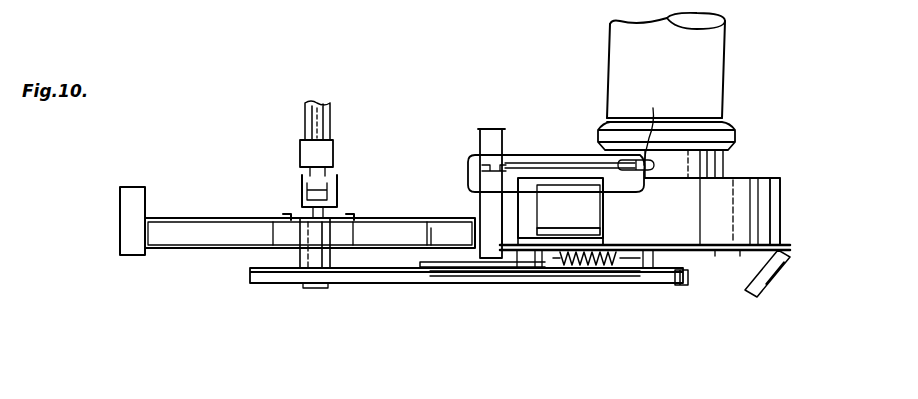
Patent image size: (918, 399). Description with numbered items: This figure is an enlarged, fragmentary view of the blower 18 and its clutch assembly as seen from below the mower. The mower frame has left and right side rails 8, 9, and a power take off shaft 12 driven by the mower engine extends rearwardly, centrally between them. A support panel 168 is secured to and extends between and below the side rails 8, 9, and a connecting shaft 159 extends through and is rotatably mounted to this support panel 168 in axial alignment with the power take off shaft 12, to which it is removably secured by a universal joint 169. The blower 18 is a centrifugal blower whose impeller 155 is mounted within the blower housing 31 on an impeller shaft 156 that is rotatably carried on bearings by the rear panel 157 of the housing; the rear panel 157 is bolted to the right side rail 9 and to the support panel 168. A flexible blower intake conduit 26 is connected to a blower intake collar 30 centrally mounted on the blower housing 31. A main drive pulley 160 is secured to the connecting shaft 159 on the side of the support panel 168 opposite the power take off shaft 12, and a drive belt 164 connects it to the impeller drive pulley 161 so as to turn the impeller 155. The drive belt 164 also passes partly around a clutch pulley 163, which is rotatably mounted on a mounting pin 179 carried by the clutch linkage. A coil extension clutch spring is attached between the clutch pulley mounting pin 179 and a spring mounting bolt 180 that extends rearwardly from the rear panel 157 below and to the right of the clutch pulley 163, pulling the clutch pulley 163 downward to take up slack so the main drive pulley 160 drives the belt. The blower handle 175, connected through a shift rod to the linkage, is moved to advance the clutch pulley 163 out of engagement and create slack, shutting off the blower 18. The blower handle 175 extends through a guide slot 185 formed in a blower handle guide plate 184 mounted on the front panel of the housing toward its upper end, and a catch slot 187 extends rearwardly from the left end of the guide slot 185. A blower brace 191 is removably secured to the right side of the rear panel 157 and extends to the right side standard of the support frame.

The left side rail 8 is at (120, 209).
The right side rail 9 is at (478, 136).
The power take off shaft 12 is at (304, 122).
The blower 18 is at (780, 206).
The blower intake conduit 26 is at (717, 62).
The blower intake collar 30 is at (727, 163).
The blower housing 31 is at (776, 178).
The impeller 155 is at (586, 212).
The impeller shaft 156 is at (682, 258).
The rear panel 157 is at (727, 255).
The connecting shaft 159 is at (300, 210).
The main drive pulley 160 is at (272, 283).
The impeller drive pulley 161 is at (673, 285).
The clutch pulley 163 is at (588, 280).
The drive belt 164 is at (400, 286).
The support panel 168 is at (178, 215).
The universal joint 169 is at (328, 184).
The blower handle 175 is at (648, 125).
The clutch pulley mounting pin 179 is at (545, 283).
The spring mounting bolt 180 is at (614, 285).
The blower handle guide plate 184 is at (642, 185).
The guide slot 185 is at (530, 166).
The catch slot 187 is at (465, 186).
The blower brace 191 is at (760, 278).